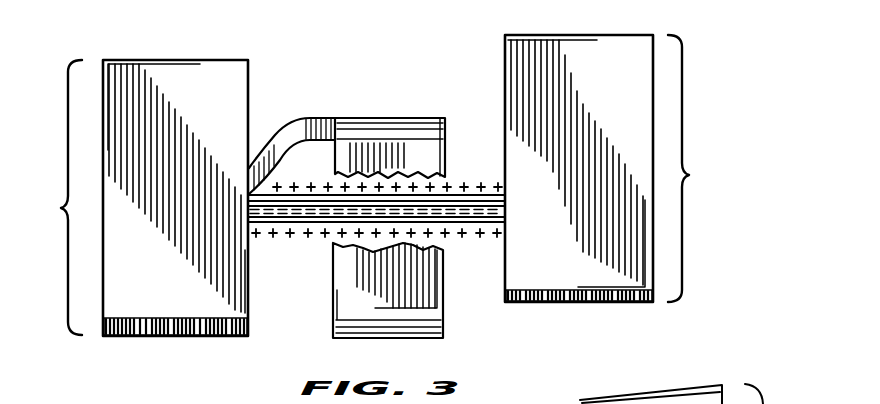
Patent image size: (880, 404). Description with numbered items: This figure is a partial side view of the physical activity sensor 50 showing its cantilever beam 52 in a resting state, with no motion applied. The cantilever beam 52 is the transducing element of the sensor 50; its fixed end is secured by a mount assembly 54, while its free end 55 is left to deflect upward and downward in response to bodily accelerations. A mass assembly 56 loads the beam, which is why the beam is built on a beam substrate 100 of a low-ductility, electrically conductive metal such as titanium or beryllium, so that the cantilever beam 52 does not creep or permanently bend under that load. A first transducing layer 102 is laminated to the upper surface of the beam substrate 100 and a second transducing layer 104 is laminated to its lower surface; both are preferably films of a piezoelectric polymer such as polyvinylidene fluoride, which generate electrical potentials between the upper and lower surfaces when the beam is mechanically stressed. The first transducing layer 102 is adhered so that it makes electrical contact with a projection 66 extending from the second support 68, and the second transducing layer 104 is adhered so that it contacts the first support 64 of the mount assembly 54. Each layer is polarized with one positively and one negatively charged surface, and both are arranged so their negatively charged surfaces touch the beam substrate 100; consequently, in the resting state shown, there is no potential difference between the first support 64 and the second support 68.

The sensor 50 is at (117, 43).
The cantilever beam 52 is at (466, 186).
The mount assembly 54 is at (62, 208).
The free end 55 is at (697, 86).
The mass assembly 56 is at (690, 176).
The first support 64 is at (120, 337).
The projection 66 is at (284, 126).
The second support 68 is at (386, 120).
The beam substrate 100 is at (505, 212).
The first transducing layer 102 is at (505, 194).
The second transducing layer 104 is at (505, 221).